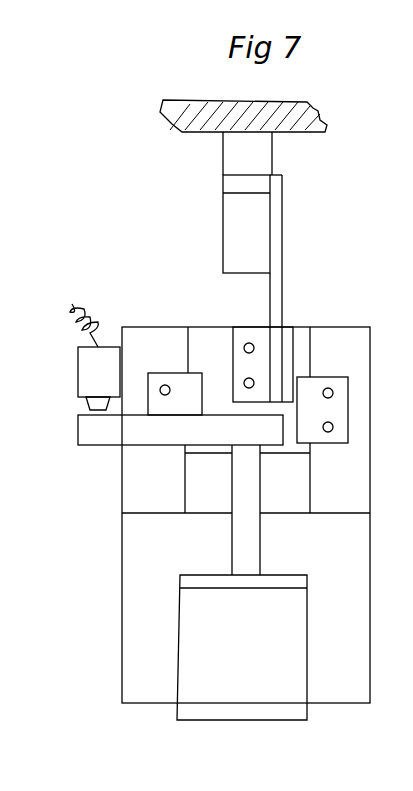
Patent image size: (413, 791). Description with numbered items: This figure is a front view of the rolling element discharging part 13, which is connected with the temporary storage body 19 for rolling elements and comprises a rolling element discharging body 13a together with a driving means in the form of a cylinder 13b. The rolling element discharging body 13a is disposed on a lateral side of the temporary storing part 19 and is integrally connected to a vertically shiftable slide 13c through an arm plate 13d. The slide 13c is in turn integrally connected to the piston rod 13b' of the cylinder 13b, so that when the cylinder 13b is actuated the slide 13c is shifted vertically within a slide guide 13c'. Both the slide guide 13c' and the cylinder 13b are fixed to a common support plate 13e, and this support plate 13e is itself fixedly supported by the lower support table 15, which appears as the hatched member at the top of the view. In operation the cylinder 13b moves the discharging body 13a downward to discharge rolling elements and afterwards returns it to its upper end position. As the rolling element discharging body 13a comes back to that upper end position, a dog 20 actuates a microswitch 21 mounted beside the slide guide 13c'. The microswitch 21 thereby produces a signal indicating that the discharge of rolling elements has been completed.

The rolling element discharging part 13 is at (338, 217).
The rolling element discharging body 13a is at (233, 221).
The cylinder 13b is at (262, 647).
The piston rod 13b' is at (267, 510).
The slide 13c is at (146, 449).
The slide guide 13c' is at (245, 405).
The arm plate 13d is at (283, 294).
The common support plate 13e is at (128, 633).
The lower support table 15 is at (186, 104).
The temporary storage body 19 is at (234, 155).
The dog 20 is at (84, 432).
The microswitch 21 is at (86, 369).